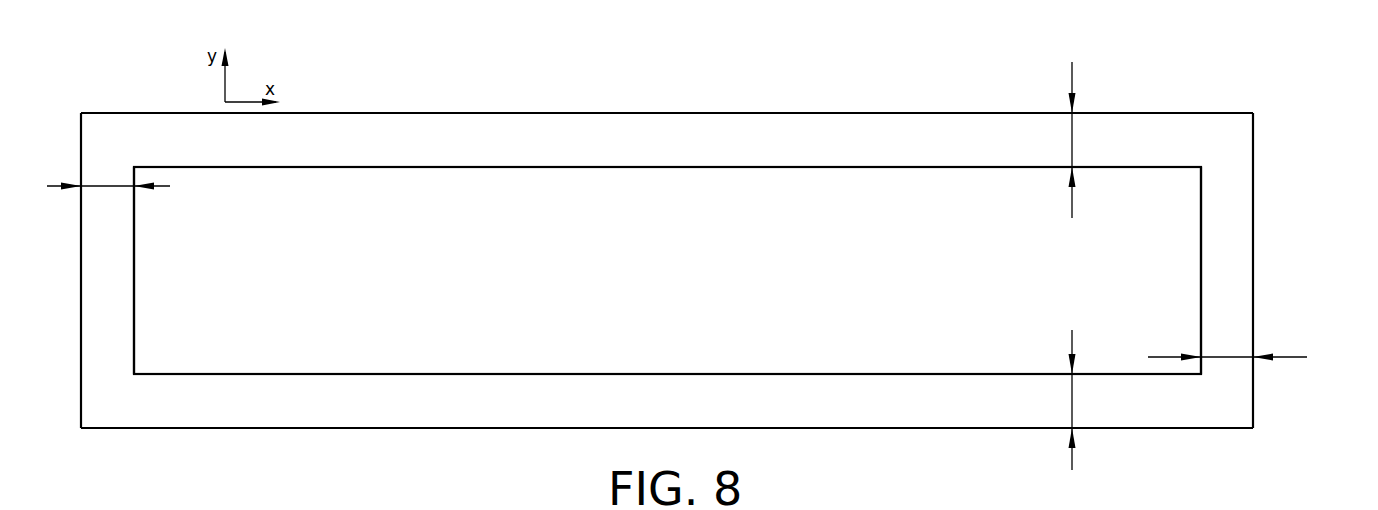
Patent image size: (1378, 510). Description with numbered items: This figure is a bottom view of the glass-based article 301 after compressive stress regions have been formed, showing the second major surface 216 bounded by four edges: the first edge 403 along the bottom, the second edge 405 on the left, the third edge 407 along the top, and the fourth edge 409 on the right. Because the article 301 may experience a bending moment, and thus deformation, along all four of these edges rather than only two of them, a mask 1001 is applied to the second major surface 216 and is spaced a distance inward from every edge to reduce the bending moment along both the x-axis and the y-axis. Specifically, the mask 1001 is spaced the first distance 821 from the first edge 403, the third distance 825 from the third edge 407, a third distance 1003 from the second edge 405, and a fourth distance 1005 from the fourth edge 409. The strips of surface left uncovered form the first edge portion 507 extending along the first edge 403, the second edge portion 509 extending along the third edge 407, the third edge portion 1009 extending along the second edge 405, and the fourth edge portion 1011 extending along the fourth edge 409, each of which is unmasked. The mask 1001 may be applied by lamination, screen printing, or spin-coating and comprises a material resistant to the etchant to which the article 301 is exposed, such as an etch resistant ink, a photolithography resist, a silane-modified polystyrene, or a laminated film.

The glass-based article 301 is at (707, 275).
The second edge 405 is at (81, 127).
The third edge 407 is at (712, 113).
The fourth edge 409 is at (1253, 207).
The first edge 403 is at (833, 428).
The mask 1001 is at (595, 185).
The second edge portion 509 is at (394, 130).
The second major surface 216 is at (862, 130).
The fourth edge portion 1011 is at (1241, 306).
The third edge portion 1009 is at (94, 360).
The first edge portion 507 is at (471, 411).
The third distance 1003 is at (100, 186).
The fourth distance 1005 is at (1231, 357).
The third distance 825 is at (1072, 133).
The first distance 821 is at (1072, 405).